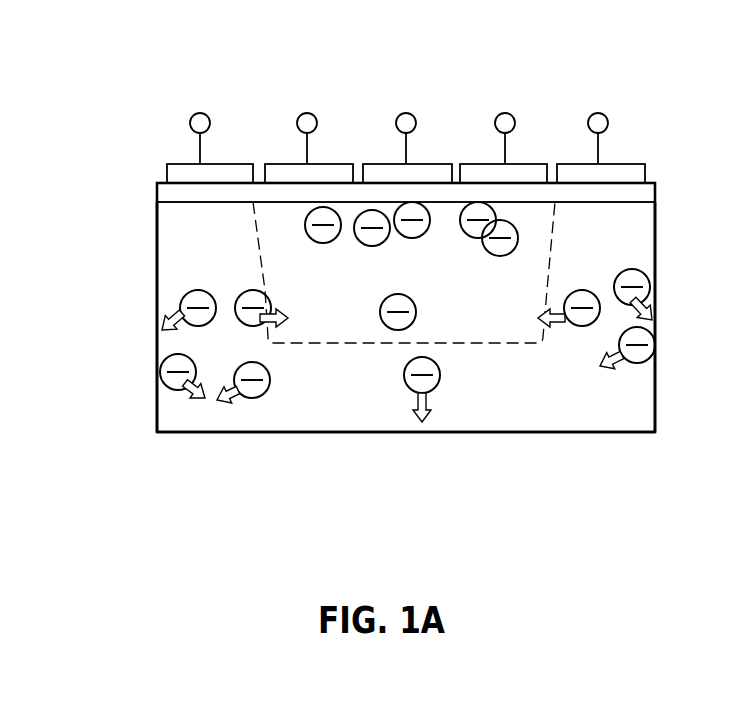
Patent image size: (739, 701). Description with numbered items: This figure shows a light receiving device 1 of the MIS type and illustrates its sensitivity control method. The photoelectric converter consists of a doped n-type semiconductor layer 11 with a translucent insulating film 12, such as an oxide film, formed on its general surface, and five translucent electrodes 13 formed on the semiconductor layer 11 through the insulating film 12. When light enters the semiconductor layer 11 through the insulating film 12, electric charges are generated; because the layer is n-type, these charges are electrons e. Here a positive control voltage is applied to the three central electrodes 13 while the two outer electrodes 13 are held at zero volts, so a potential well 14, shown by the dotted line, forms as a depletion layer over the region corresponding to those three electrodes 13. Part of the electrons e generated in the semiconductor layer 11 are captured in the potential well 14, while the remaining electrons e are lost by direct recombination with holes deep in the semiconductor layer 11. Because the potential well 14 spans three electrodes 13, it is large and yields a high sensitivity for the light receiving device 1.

The light receiving device 1 is at (592, 433).
The semiconductor layer 11 is at (172, 420).
The insulating film 12 is at (165, 193).
The electrodes 13 is at (282, 168).
The potential well 14 is at (403, 347).
The electrons e is at (257, 398).